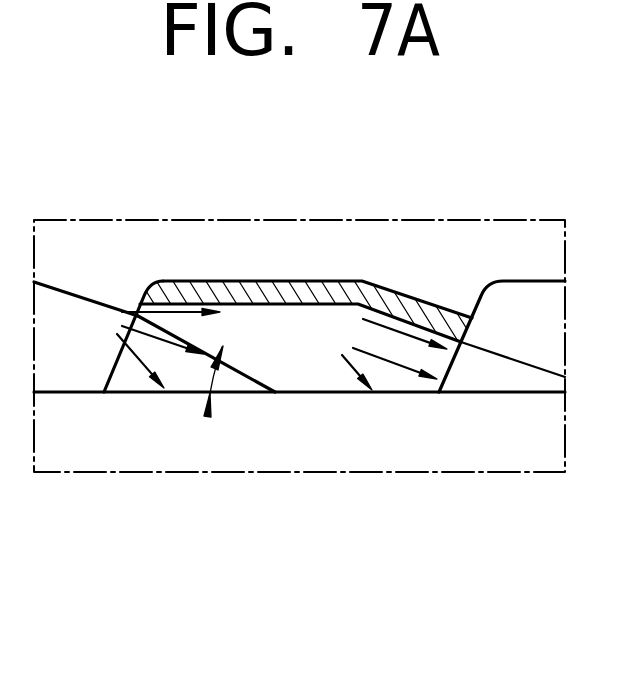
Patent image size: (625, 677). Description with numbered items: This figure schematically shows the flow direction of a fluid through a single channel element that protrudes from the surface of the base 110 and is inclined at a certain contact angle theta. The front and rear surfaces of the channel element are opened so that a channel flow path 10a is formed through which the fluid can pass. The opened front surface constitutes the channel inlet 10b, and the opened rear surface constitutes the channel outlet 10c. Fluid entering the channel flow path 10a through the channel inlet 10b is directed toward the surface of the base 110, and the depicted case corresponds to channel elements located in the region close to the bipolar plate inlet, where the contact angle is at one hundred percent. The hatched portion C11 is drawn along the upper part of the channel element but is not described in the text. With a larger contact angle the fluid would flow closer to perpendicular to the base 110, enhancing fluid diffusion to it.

The channel flow path 10a is at (274, 330).
The channel inlet 10b is at (137, 313).
The channel outlet 10c is at (447, 380).
The coating layer C11 is at (368, 267).
The base 110 is at (223, 462).